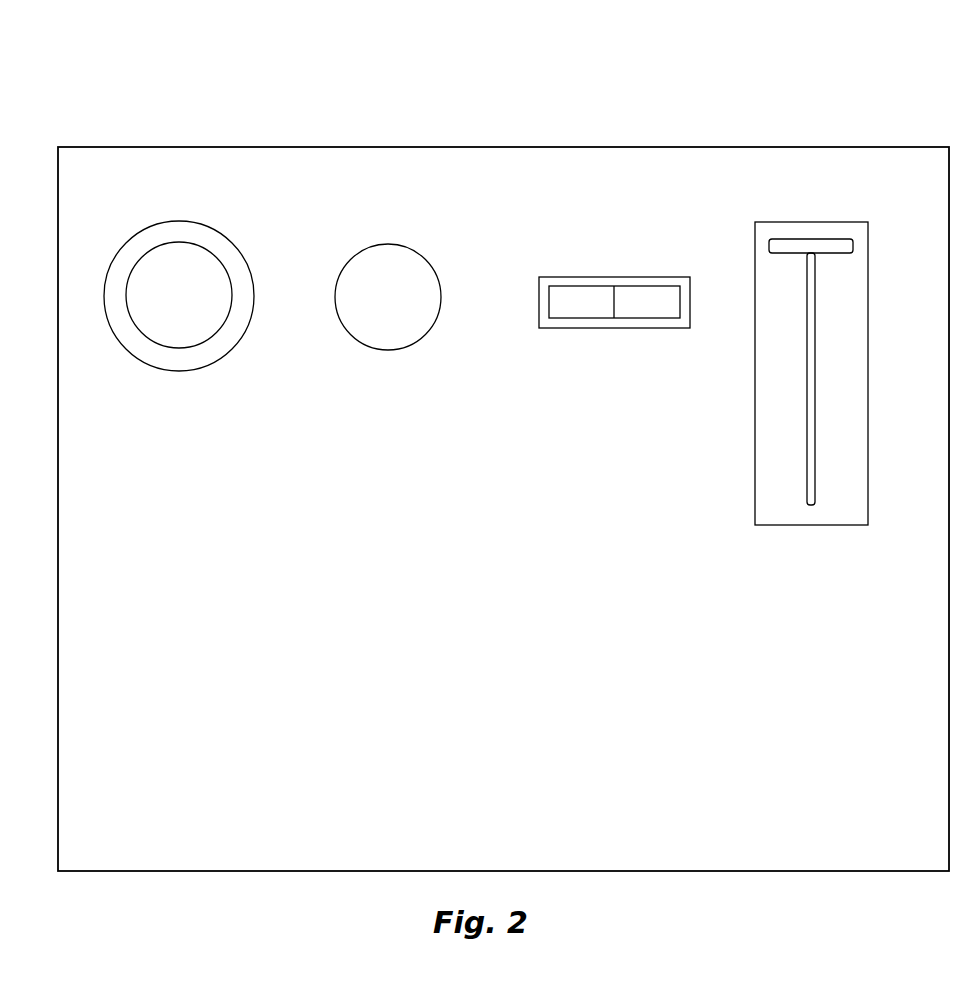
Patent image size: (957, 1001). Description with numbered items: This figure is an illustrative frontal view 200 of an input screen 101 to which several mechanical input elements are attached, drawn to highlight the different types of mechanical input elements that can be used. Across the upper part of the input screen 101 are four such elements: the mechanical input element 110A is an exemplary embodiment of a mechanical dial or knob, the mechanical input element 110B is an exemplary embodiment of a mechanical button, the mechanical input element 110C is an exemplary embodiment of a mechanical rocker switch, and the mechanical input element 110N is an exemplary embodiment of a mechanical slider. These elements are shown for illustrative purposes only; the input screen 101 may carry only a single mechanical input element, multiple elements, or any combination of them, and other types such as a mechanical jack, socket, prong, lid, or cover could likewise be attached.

The frontal view 200 is at (492, 72).
The input screen 101 is at (652, 147).
The mechanical input element (mechanical dial/knob) 110A is at (178, 223).
The mechanical input element (mechanical button) 110B is at (384, 246).
The mechanical input element (mechanical rocker switch) 110C is at (613, 277).
The mechanical input element (mechanical slider) 110N is at (800, 222).